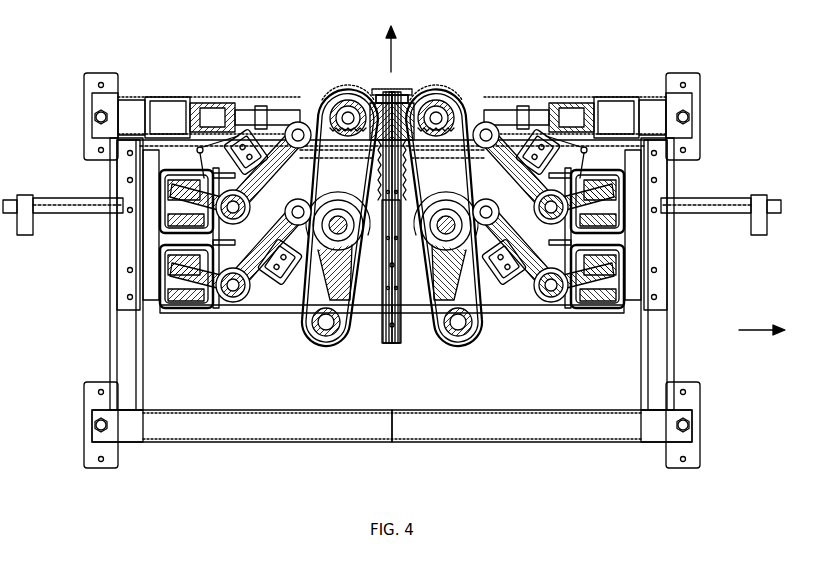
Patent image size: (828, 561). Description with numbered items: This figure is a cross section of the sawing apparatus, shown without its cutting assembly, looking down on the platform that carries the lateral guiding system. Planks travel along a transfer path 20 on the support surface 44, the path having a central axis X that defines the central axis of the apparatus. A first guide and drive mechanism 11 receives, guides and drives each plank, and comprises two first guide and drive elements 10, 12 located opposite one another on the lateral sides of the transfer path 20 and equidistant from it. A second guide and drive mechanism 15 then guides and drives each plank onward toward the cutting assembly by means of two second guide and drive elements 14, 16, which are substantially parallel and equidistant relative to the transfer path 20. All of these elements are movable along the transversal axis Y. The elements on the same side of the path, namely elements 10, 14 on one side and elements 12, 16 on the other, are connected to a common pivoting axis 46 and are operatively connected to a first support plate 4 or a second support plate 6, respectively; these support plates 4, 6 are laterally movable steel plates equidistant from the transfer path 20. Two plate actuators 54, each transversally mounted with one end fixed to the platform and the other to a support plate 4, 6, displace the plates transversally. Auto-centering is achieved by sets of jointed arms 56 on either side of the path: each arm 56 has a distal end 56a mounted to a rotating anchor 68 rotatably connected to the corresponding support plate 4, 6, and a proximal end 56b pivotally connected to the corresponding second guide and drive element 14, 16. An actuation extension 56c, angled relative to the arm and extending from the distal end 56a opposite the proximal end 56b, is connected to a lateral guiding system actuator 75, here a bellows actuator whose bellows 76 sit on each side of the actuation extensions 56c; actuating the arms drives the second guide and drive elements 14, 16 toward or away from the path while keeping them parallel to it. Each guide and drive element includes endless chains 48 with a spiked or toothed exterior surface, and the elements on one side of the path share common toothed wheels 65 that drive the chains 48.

The first support plate 4 is at (294, 305).
The second support plate 6 is at (491, 303).
The first guide and drive element 10 is at (337, 214).
The first guide and drive mechanism 11 is at (389, 297).
The first guide and drive element 12 is at (444, 214).
The second guide and drive element 14 is at (341, 112).
The second guide and drive mechanism 15 is at (380, 104).
The second guide and drive element 16 is at (440, 112).
The transfer path 20 is at (411, 326).
The support surface 44 is at (391, 345).
The common pivoting axis 46 is at (284, 300).
The endless chains 48 is at (327, 345).
The plate actuator 54 is at (60, 204).
The jointed arms 56 is at (256, 140).
The distal end 56a is at (262, 292).
The proximal end 56b is at (299, 125).
The actuation extension 56c is at (200, 150).
The common toothed wheels 65 is at (340, 108).
The rotating anchor 68 is at (226, 222).
The lateral guiding system actuator 75 is at (626, 260).
The bellows 76 is at (160, 280).